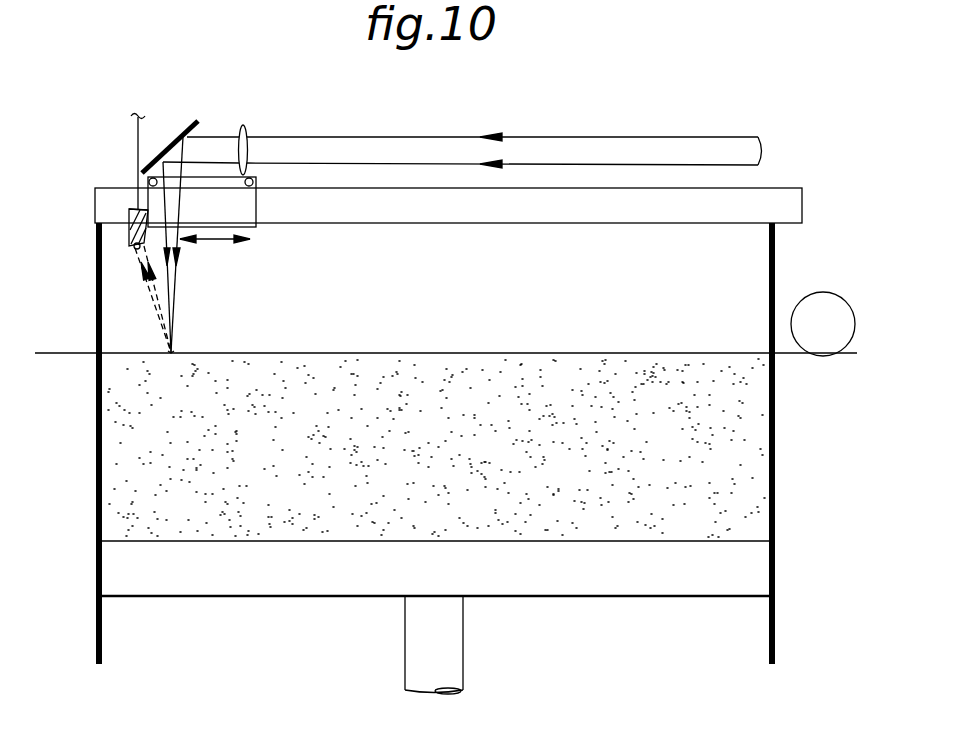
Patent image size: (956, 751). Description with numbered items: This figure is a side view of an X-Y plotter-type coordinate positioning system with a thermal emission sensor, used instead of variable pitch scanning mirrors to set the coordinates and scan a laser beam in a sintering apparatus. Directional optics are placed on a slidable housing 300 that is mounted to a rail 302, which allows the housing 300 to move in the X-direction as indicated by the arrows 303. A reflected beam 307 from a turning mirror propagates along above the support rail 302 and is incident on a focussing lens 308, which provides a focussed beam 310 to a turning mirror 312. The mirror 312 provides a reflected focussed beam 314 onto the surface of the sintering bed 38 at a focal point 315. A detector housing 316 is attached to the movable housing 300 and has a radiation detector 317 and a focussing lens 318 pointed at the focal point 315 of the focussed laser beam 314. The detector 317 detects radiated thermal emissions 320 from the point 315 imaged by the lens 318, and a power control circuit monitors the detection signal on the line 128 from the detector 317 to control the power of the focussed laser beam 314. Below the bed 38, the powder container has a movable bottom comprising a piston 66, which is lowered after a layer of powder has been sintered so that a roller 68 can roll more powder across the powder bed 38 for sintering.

The powder bed 38 is at (62, 352).
The piston 66 is at (304, 586).
The roller 68 is at (837, 337).
The line 128 is at (137, 130).
The slidable housing 300 is at (247, 205).
The rail 302 is at (420, 215).
The arrows 303 is at (212, 242).
The reflected beam 307 is at (412, 146).
The focussing lens 308 is at (247, 128).
The focussed beam 310 is at (210, 140).
The turning mirror 312 is at (190, 124).
The reflected focussed beam 314 is at (171, 278).
The focal point 315 is at (172, 350).
The detector housing 316 is at (134, 207).
The radiation detector 317 is at (130, 210).
The focussing lens 318 is at (135, 246).
The radiated thermal emissions 320 is at (152, 283).